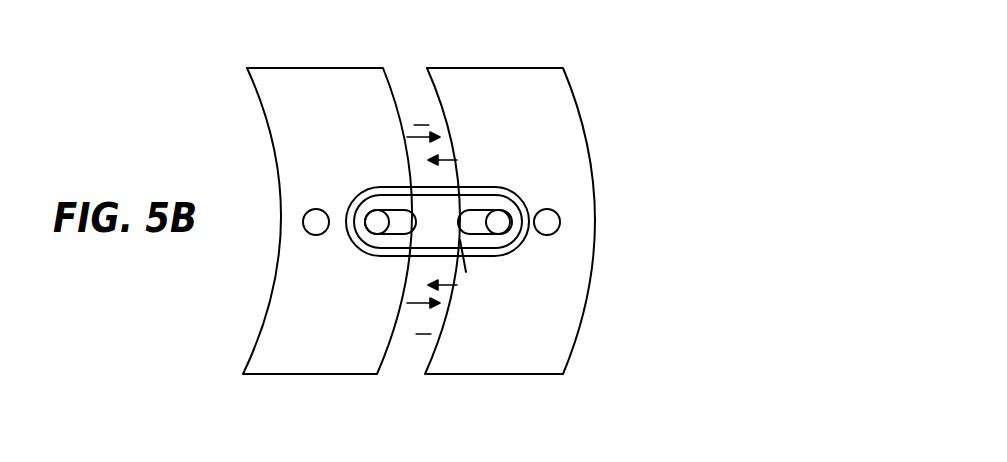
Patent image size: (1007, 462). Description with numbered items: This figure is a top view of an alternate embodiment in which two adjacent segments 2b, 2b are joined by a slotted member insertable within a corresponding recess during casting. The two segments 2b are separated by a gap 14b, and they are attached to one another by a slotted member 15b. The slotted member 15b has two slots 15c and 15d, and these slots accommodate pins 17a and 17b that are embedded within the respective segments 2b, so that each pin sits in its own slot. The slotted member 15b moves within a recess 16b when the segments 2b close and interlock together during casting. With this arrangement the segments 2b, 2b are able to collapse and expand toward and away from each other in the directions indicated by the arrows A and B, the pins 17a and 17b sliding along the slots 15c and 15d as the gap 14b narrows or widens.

The segment 2b is at (317, 374).
The gap 14b is at (402, 78).
The slotted member 15b is at (466, 252).
The slot 15c is at (396, 222).
The slot 15d is at (473, 222).
The recess 16b is at (524, 246).
The pin 17a is at (377, 222).
The pin 17b is at (498, 222).